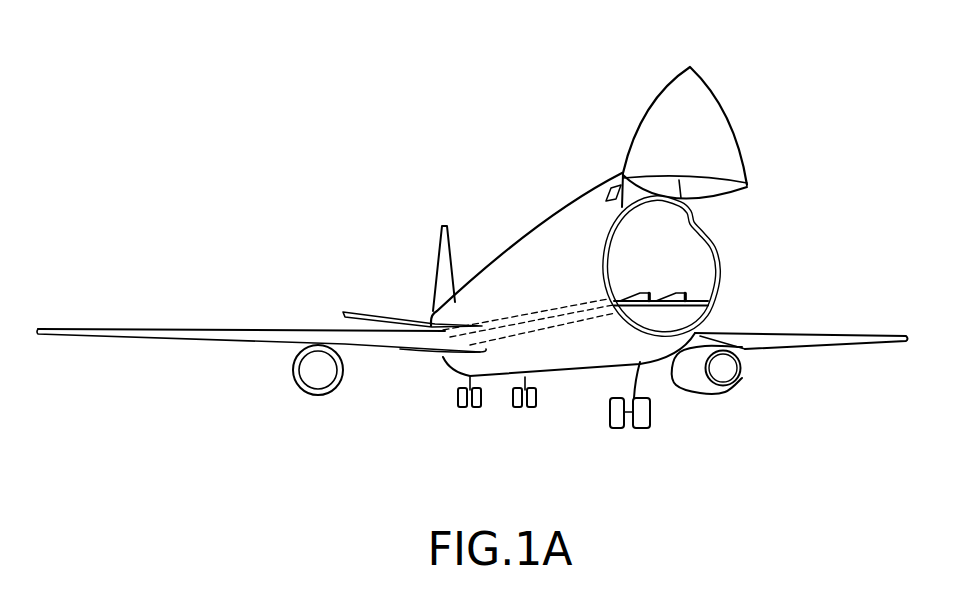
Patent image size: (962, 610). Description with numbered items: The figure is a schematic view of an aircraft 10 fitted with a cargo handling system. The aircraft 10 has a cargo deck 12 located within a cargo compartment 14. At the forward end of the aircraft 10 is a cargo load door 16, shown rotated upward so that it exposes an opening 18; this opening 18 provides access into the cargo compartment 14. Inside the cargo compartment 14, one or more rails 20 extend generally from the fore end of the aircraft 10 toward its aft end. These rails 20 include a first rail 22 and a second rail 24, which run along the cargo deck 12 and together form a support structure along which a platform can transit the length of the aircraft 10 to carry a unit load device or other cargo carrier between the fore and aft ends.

The aircraft 10 is at (452, 103).
The cargo deck 12 is at (716, 308).
The cargo compartment 14 is at (680, 240).
The cargo load door 16 is at (723, 93).
The opening 18 is at (729, 242).
The rails 20 is at (655, 270).
The first rail 22 is at (687, 296).
The second rail 24 is at (617, 292).